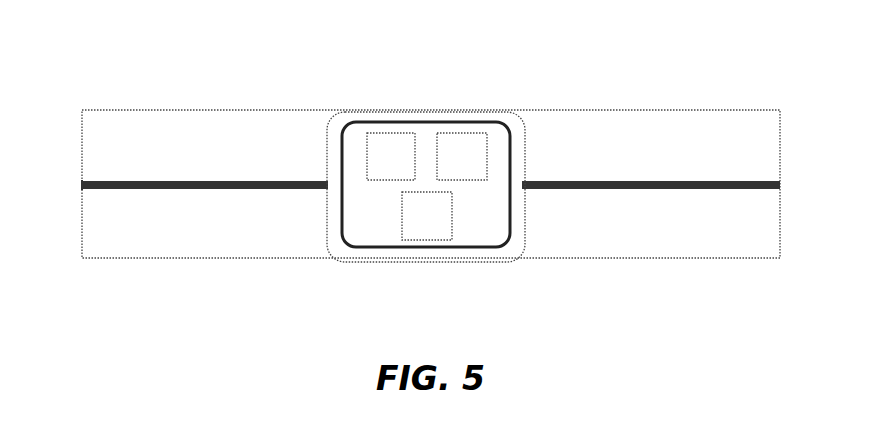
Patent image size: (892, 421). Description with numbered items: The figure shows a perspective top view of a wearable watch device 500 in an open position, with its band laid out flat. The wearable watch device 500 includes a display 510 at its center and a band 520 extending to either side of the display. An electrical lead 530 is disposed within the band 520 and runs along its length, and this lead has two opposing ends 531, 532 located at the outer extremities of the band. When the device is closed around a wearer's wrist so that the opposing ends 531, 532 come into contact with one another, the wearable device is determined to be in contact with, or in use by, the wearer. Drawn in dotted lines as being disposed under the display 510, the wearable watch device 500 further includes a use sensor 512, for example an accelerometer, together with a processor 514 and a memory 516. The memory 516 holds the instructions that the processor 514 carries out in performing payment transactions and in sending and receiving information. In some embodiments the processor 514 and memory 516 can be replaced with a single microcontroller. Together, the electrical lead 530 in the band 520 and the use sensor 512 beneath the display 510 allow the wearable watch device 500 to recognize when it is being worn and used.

The wearable watch device 500 is at (185, 78).
The display 510 is at (499, 246).
The use sensor 512 is at (391, 156).
The processor 514 is at (462, 156).
The memory 516 is at (427, 216).
The band 520 is at (240, 261).
The electrical lead 530 is at (129, 191).
The opposing end 531 is at (784, 191).
The opposing end 532 is at (79, 186).